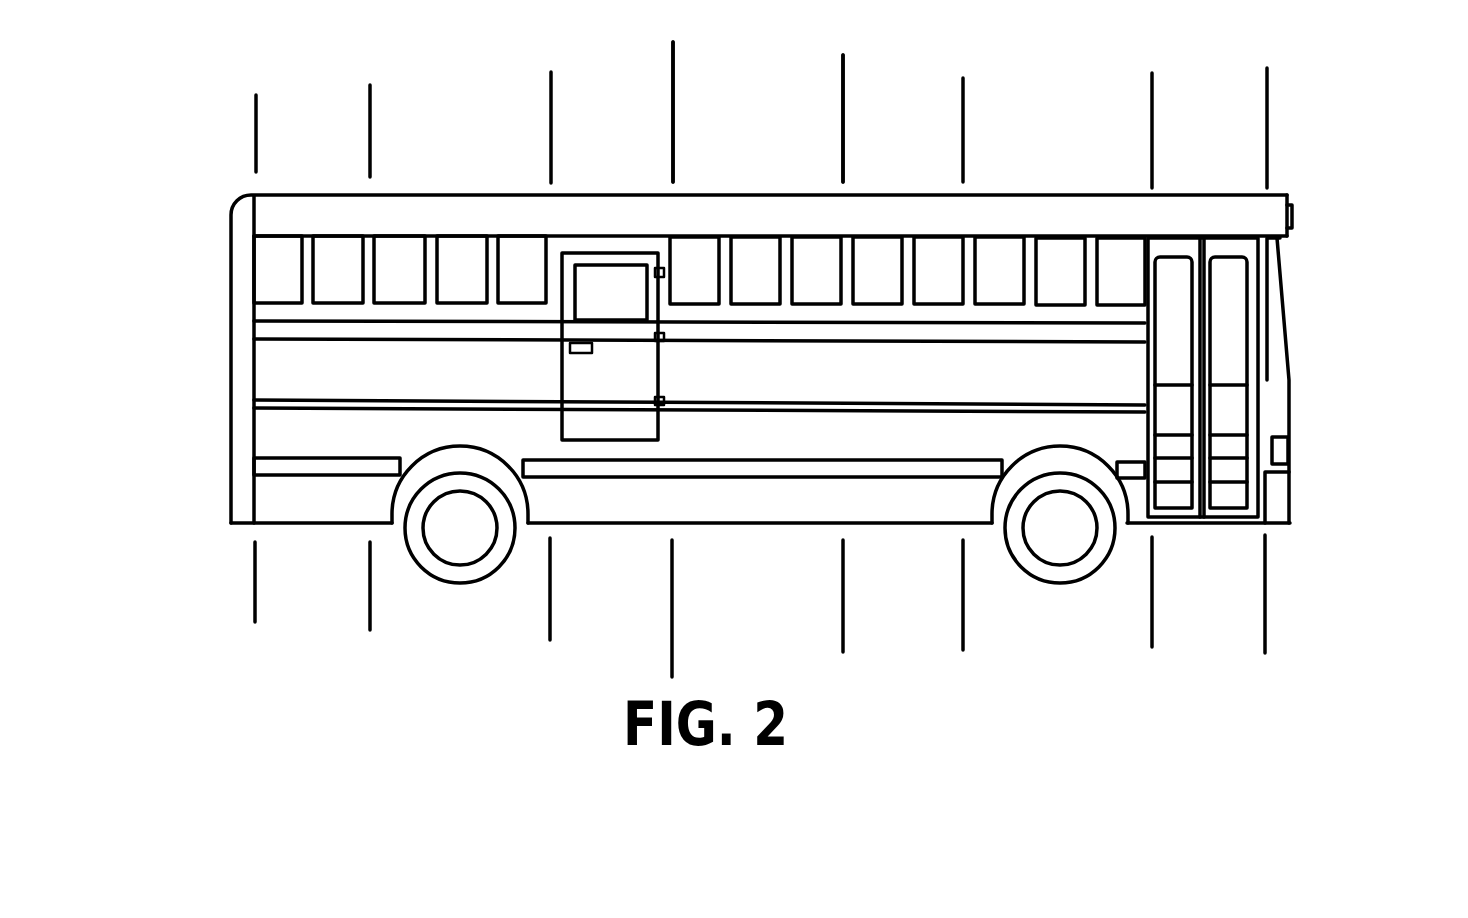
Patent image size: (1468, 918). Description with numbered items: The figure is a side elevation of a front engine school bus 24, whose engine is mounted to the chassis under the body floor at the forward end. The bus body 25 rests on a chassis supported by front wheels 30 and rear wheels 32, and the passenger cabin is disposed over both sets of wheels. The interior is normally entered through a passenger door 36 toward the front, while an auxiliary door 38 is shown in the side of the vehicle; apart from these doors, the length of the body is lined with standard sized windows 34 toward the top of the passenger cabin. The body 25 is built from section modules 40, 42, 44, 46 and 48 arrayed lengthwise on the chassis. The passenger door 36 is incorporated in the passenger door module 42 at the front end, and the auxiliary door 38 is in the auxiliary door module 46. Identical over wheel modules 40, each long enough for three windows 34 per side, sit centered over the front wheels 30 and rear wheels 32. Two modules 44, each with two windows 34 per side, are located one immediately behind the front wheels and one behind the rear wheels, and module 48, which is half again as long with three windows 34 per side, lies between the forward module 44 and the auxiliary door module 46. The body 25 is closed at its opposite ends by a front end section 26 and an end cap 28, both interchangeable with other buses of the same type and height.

The front engine school bus 24 is at (1342, 115).
The bus body 25 is at (1300, 196).
The front end section 26 is at (1290, 472).
The end cap 28 is at (232, 523).
The front wheels 30 is at (1063, 543).
The rear wheels 32 is at (457, 547).
The windows 34 is at (1063, 267).
The passenger door 36 is at (1227, 517).
The auxiliary door 38 is at (637, 420).
The over wheel module 40 is at (486, 138).
The passenger door module 42 is at (1234, 137).
The module 44 is at (332, 138).
The auxiliary door module 46 is at (634, 127).
The module 48 is at (782, 115).